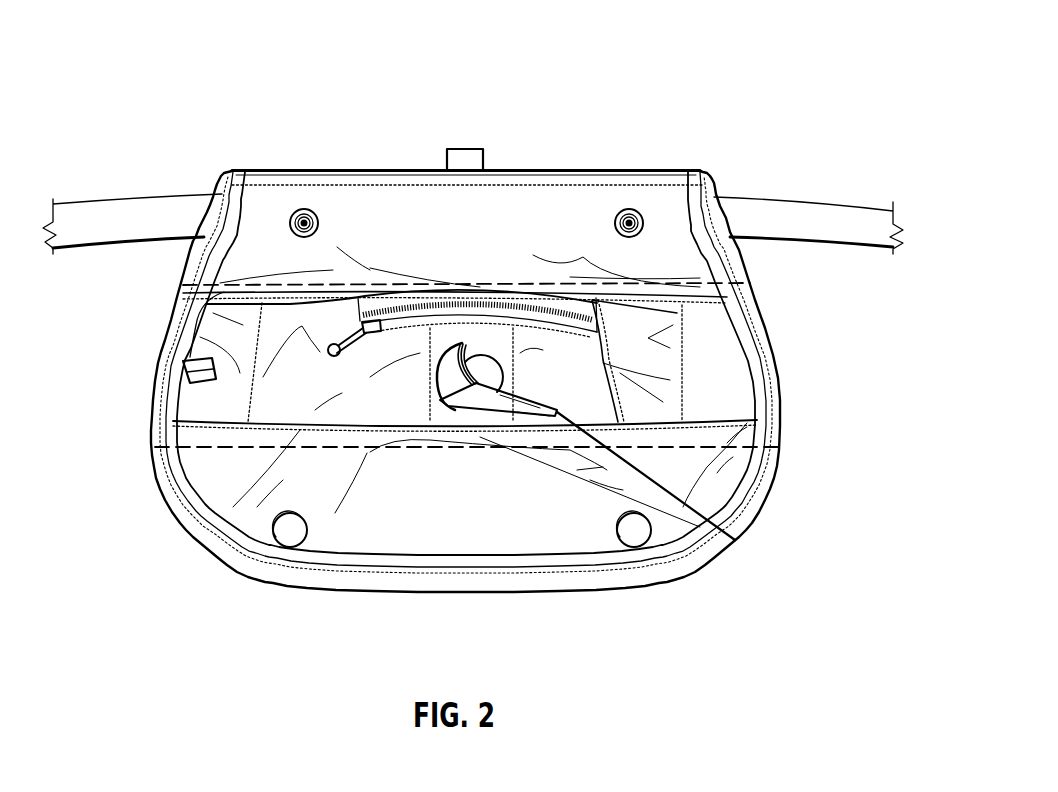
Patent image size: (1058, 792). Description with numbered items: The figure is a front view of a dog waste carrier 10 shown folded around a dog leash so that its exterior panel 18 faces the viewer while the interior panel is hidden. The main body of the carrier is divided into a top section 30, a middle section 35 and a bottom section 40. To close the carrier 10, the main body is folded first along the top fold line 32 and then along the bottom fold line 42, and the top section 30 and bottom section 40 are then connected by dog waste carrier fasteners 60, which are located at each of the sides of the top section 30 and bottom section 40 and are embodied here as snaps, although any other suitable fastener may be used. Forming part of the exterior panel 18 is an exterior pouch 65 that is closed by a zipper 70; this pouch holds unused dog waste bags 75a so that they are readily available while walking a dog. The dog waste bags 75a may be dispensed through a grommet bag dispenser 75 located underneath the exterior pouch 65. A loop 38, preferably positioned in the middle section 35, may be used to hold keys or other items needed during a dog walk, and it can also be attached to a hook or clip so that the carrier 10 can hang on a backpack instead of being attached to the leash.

The dog waste carrier 10 is at (740, 45).
The exterior panel 18 is at (428, 210).
The top section 30 is at (184, 272).
The top fold line 32 is at (213, 321).
The middle section 35 is at (153, 380).
The loop 38 is at (185, 378).
The bottom section 40 is at (192, 536).
The bottom fold line 42 is at (193, 453).
The dog waste carrier fasteners 60 is at (306, 207).
The exterior pouch 65 is at (562, 305).
The zipper 70 is at (292, 304).
The grommet bag dispenser 75 is at (530, 380).
The dog waste bags 75a is at (735, 540).